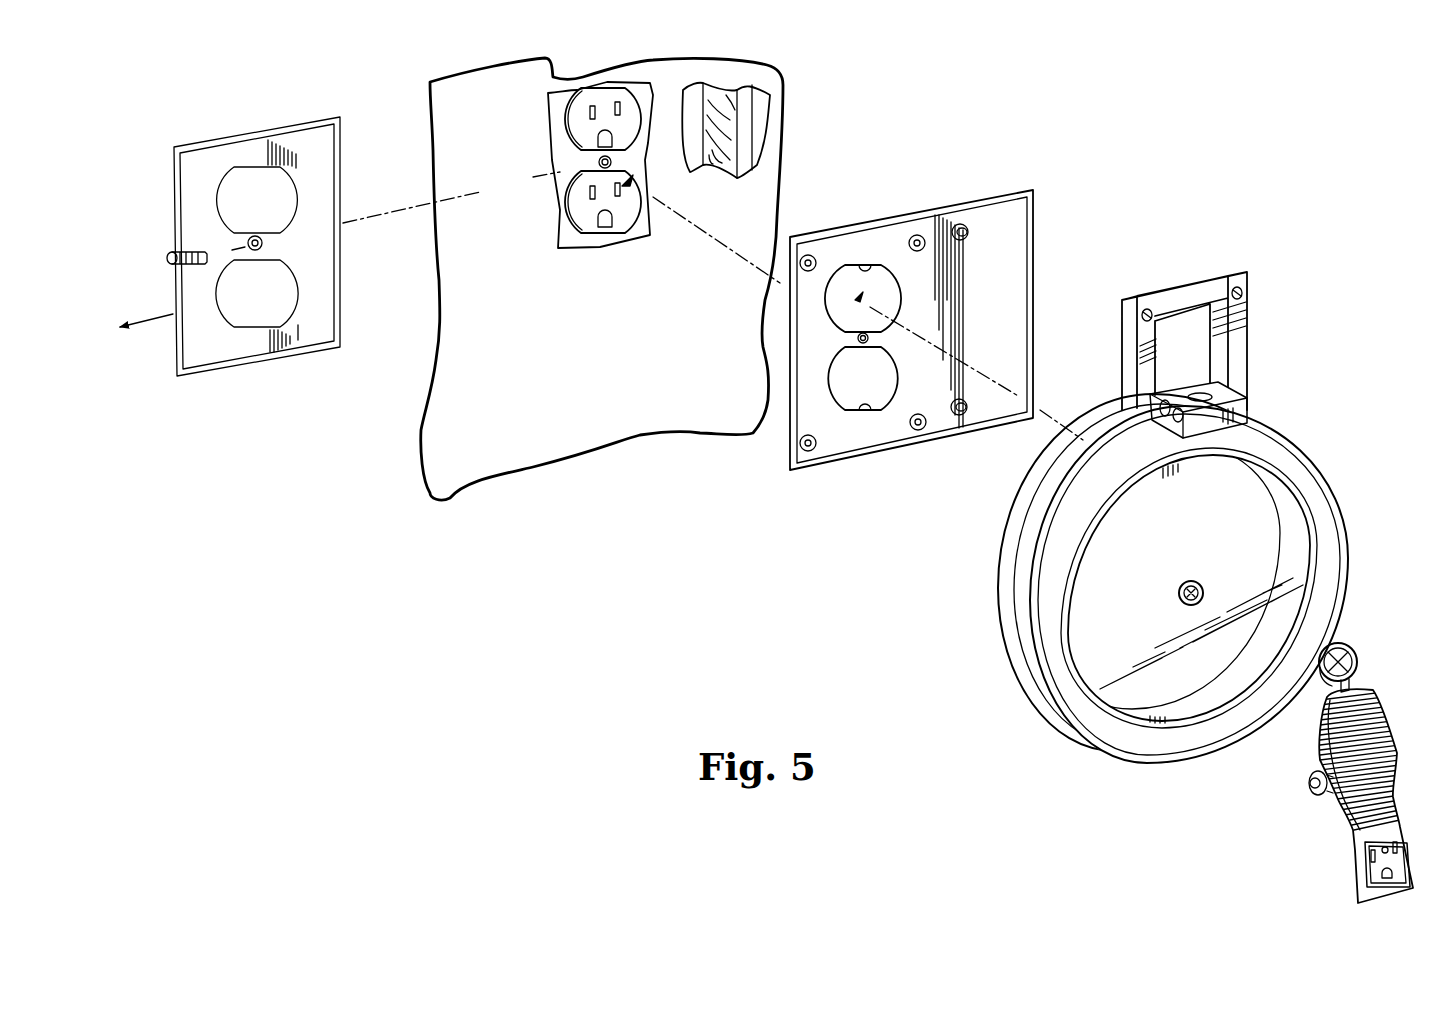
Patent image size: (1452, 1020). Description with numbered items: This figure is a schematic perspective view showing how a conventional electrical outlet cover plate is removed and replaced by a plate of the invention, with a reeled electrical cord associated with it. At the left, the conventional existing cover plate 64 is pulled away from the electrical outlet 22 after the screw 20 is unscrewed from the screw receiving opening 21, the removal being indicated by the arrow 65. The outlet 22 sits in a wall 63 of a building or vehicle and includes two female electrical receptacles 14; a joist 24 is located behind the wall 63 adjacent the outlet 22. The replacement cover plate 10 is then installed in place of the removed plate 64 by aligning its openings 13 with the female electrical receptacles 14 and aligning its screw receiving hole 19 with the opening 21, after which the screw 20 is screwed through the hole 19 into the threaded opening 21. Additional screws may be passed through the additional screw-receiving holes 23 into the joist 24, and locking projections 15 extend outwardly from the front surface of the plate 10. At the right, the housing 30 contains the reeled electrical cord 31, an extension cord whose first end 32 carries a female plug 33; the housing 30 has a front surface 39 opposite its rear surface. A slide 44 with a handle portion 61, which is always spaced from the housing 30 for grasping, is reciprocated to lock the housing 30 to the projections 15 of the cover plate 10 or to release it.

The cover plate 10 is at (1062, 188).
The openings 13 is at (867, 280).
The female electrical receptacles 14 is at (576, 118).
The locking projections 15 is at (813, 256).
The screw receiving hole 19 is at (860, 342).
The screw 20 is at (168, 255).
The screw receiving opening 21 is at (560, 173).
The electrical outlet 22 is at (556, 155).
The additional screw-receiving holes 23 is at (963, 227).
The joist 24 is at (718, 105).
The housing 30 is at (1333, 490).
The electrical cord 31 is at (1340, 695).
The first end 32 is at (1406, 750).
The female plug 33 is at (1370, 860).
The front surface 39 is at (1107, 618).
The slide 44 is at (1260, 319).
The handle portion 61 is at (1178, 287).
The wall 63 is at (510, 392).
The existing cover plate 64 is at (233, 384).
The arrow 65 is at (155, 318).